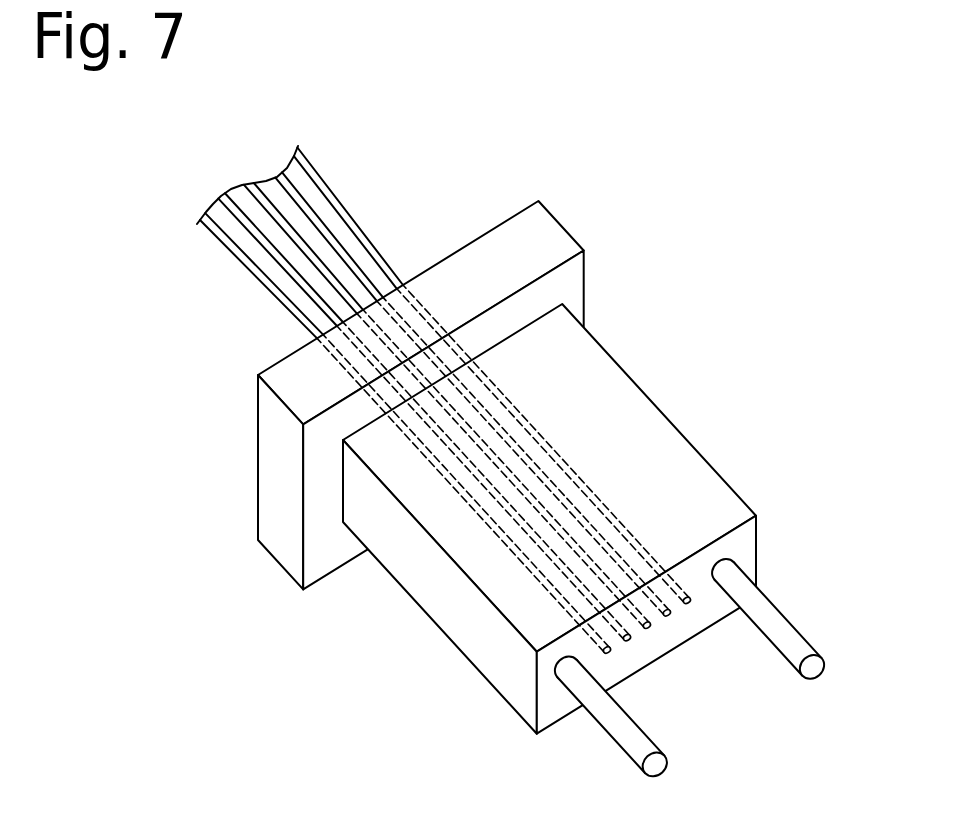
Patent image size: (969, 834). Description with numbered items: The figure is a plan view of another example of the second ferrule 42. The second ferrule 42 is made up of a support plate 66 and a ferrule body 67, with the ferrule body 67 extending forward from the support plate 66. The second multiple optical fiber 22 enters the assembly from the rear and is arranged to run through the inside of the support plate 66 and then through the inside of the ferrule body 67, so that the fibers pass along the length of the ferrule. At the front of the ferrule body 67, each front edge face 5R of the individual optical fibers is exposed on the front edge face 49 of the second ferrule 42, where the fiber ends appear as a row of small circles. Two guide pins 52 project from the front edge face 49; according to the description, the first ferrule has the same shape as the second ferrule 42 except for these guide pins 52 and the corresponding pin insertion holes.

The second multiple optical fiber 22 is at (347, 205).
The support plate 66 is at (553, 238).
The ferrule body 67 is at (643, 421).
The second ferrule 42 is at (400, 604).
The front edge face 49 is at (740, 547).
The guide pins 52 is at (787, 641).
The front edge face of optical fiber 5R is at (689, 604).